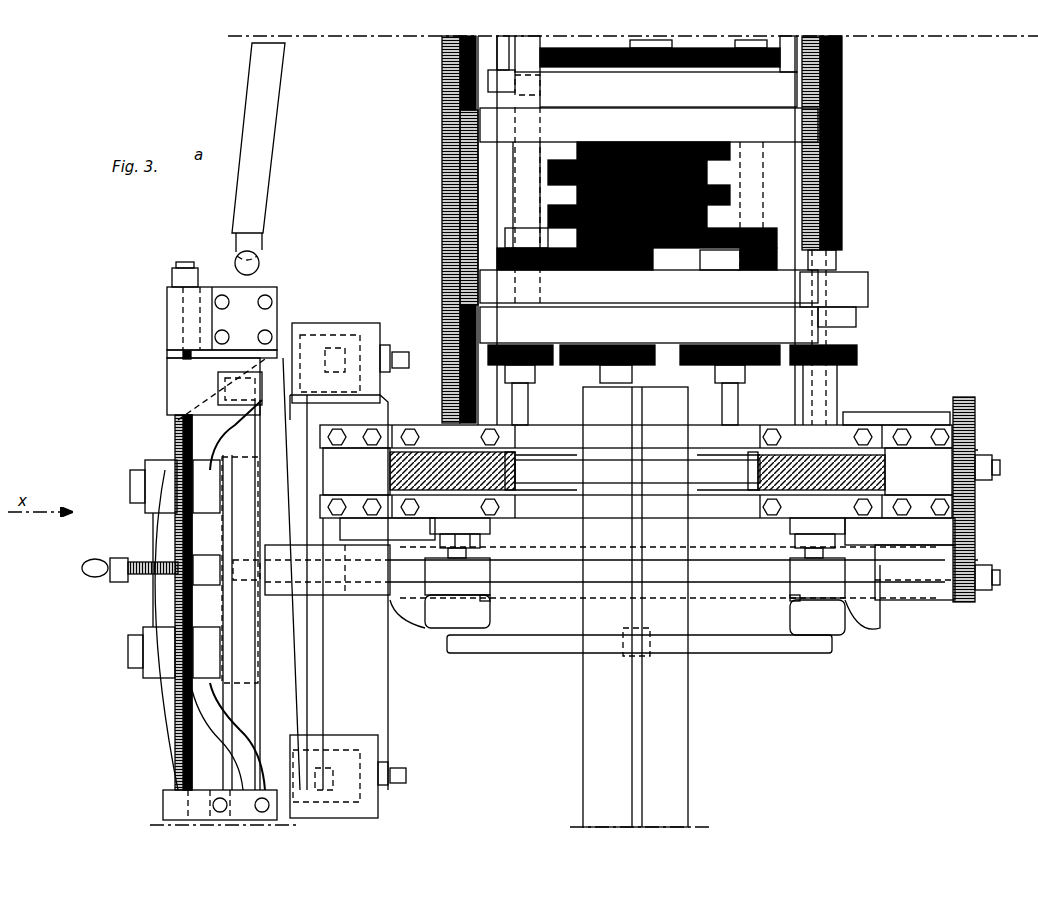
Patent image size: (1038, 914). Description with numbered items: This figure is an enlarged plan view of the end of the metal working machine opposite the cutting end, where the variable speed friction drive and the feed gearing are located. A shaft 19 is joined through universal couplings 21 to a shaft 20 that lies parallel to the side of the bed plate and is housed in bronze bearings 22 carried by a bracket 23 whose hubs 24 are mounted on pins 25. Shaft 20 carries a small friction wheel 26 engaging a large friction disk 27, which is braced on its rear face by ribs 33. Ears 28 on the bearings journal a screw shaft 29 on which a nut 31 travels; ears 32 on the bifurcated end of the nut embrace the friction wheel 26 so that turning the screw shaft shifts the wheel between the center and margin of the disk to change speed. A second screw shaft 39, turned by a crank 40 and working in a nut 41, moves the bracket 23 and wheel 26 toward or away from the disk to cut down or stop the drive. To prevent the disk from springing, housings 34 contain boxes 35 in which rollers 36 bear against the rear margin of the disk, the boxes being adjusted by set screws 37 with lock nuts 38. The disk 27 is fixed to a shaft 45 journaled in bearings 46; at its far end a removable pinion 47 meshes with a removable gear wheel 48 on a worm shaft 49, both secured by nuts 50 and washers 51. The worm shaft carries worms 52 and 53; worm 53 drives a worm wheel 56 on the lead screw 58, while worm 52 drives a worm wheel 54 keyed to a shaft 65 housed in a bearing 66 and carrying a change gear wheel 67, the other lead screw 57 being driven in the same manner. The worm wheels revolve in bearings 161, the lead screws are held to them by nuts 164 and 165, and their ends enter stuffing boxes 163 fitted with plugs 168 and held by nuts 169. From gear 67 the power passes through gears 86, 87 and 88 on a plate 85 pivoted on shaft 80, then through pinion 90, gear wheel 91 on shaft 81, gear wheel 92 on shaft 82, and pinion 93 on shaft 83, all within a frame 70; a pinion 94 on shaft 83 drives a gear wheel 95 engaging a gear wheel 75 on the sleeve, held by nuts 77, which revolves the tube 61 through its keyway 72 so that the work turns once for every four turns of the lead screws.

The shaft 19 is at (258, 147).
The universal couplings 21 is at (259, 262).
The bronze bearings 22 is at (268, 322).
The ears 28 is at (167, 311).
The ears 32 is at (218, 366).
The nut 31 is at (175, 380).
The friction wheel 26 is at (240, 388).
The screw shaft 29 is at (175, 440).
The shaft 20 is at (227, 574).
The pins 25 is at (130, 487).
The hubs 24 is at (150, 505).
The bracket 23 is at (160, 545).
The crank 40 is at (80, 568).
The screw shaft 39 is at (135, 575).
The nut 41 is at (226, 570).
The ribs 33 is at (295, 572).
The friction disk 27 is at (290, 475).
The housings 34 is at (360, 325).
The boxes 35 is at (320, 335).
The rollers 36 is at (335, 350).
The lock nuts 38 is at (388, 350).
The set screws 37 is at (410, 362).
The bearings 46 is at (912, 612).
The nut 165 is at (440, 532).
The nut 164 is at (495, 524).
The stuffing boxes 163 is at (490, 570).
The plugs 168 is at (635, 610).
The nuts 169 is at (492, 600).
The shaft 45 is at (667, 572).
The bearings 161 is at (762, 437).
The worm 53 is at (512, 468).
The worm wheel 56 is at (512, 490).
The worm shaft 49 is at (662, 485).
The worm wheel 54 is at (758, 478).
The worm 52 is at (890, 470).
The washers 51 is at (978, 455).
The nuts 50 is at (1000, 468).
The removable gear wheel 48 is at (977, 502).
The removable pinion 47 is at (975, 603).
The bearing 66 is at (850, 418).
The shaft 65 is at (835, 390).
The change gear wheel 67 is at (858, 352).
The lead screw 57 is at (838, 238).
The gear wheel 75 is at (548, 72).
The nuts 77 is at (617, 48).
The gear wheel 95 is at (650, 67).
The pinion 94 is at (758, 67).
The shaft 81 is at (649, 204).
The frame 70 is at (674, 223).
The shaft 82 is at (681, 210).
The shaft 80 is at (523, 185).
The shaft 83 is at (662, 195).
The pinion 93 is at (768, 232).
The gear wheel 91 is at (578, 288).
The pinion 90 is at (446, 246).
The lead screw 58 is at (446, 268).
The gear wheel 92 is at (690, 248).
The gear 88 is at (522, 345).
The gear 87 is at (592, 345).
The plate 85 is at (649, 326).
The gear 86 is at (735, 345).
The keyway 72 is at (640, 690).
The tube 61 is at (693, 723).